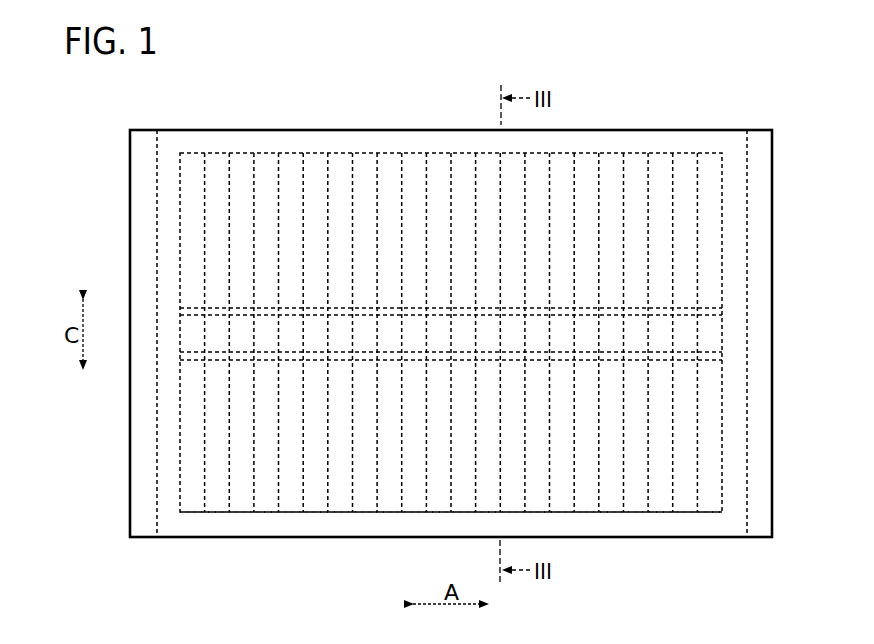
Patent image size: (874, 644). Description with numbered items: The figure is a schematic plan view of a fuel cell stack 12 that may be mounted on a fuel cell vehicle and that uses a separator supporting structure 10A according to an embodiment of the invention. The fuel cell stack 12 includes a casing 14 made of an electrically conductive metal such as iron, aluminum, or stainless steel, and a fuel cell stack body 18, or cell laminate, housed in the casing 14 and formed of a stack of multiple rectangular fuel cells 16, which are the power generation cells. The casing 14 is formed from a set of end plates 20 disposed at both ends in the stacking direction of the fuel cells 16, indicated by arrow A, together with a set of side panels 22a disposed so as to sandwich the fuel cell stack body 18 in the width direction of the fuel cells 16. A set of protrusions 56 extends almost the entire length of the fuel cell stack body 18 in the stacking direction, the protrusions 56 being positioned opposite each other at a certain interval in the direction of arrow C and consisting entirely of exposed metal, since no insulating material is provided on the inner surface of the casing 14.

The fuel cell stack 12 is at (233, 80).
The casing 14 is at (761, 129).
The fuel cells 16 is at (291, 165).
The fuel cell stack body 18 is at (413, 152).
The end plates 20 is at (148, 500).
The side panels 22a is at (268, 516).
The separator supporting structure 10A is at (637, 300).
The protrusions 56 is at (702, 307).